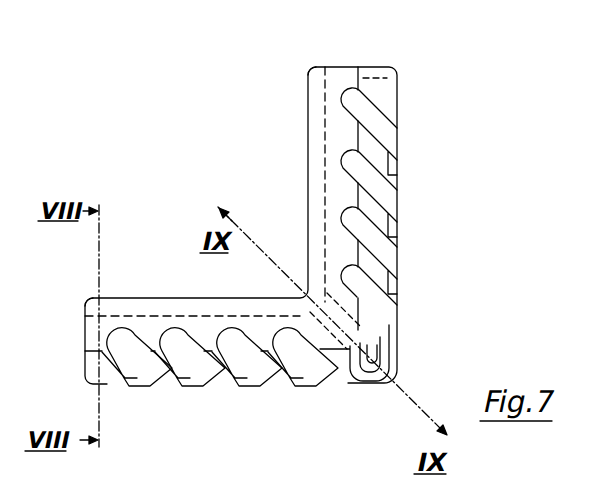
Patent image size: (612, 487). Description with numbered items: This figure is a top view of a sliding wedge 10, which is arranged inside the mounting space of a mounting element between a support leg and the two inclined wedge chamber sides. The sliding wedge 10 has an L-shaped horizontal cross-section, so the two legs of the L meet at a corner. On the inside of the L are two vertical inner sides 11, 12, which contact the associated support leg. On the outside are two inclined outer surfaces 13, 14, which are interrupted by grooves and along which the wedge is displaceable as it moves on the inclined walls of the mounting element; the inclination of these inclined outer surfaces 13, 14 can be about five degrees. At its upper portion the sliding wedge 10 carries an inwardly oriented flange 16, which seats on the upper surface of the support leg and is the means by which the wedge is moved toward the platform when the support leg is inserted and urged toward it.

The sliding wedge 10 is at (297, 129).
The vertical inner side 11 is at (308, 170).
The vertical inner side 12 is at (127, 299).
The inclined outer surface 13 is at (395, 158).
The inclined outer surface 14 is at (112, 372).
The inwardly oriented flange 16 is at (317, 80).